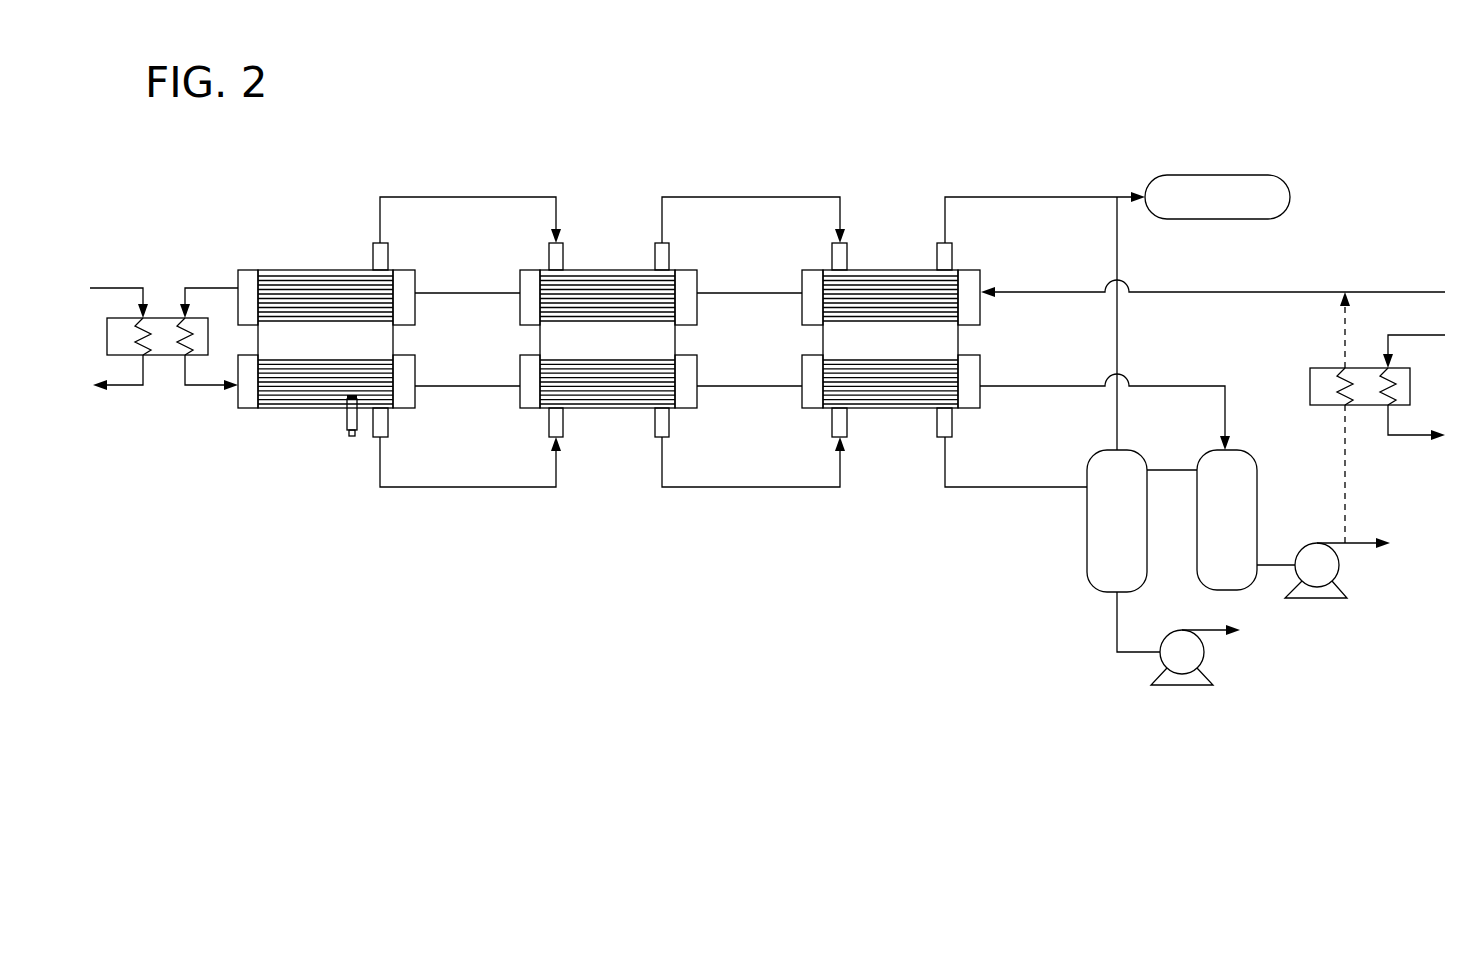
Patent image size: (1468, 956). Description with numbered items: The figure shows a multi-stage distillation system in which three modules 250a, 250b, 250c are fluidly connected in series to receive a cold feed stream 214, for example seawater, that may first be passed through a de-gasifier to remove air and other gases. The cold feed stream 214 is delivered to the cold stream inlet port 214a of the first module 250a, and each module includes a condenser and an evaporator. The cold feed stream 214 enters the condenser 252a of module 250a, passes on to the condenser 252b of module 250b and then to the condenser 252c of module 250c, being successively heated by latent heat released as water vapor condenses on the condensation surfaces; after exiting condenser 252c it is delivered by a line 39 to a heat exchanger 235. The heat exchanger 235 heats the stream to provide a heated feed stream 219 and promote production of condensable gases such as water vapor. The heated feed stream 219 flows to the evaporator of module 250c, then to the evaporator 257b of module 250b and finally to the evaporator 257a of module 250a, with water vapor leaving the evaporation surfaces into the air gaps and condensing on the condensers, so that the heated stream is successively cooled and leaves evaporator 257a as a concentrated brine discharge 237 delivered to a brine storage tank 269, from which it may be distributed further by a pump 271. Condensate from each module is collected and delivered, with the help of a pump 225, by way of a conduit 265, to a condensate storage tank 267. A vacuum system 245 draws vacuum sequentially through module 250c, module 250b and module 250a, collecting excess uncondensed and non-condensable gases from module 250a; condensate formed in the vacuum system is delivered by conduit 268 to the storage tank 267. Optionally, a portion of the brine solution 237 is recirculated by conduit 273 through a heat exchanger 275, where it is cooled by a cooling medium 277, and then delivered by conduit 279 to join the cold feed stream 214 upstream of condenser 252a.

The feed stream line 39 is at (110, 287).
The heat exchanger 235 is at (157, 357).
The heated feed stream 219 is at (202, 388).
The module 250c is at (326, 293).
The condenser 252c is at (280, 277).
The evaporator 257a is at (297, 412).
The module 250b is at (608, 316).
The condenser 252b is at (610, 277).
The evaporator 257b is at (612, 412).
The module 250a is at (937, 287).
The condenser 252a is at (903, 277).
The cold stream inlet port 214a is at (982, 310).
The vacuum system 245 is at (1026, 176).
The conduit 268 is at (1115, 235).
The cold feed stream 214 is at (1368, 291).
The brine discharge 237 is at (1014, 388).
The conduit 265 is at (1003, 490).
The storage tank 267 is at (1087, 565).
The brine storage tank 269 is at (1197, 560).
The pump 271 is at (1340, 567).
The pump 225 is at (1210, 633).
The heat exchanger 275 is at (1308, 372).
The cooling medium 277 is at (1400, 336).
The conduit 279 is at (1342, 323).
The conduit 273 is at (1343, 445).